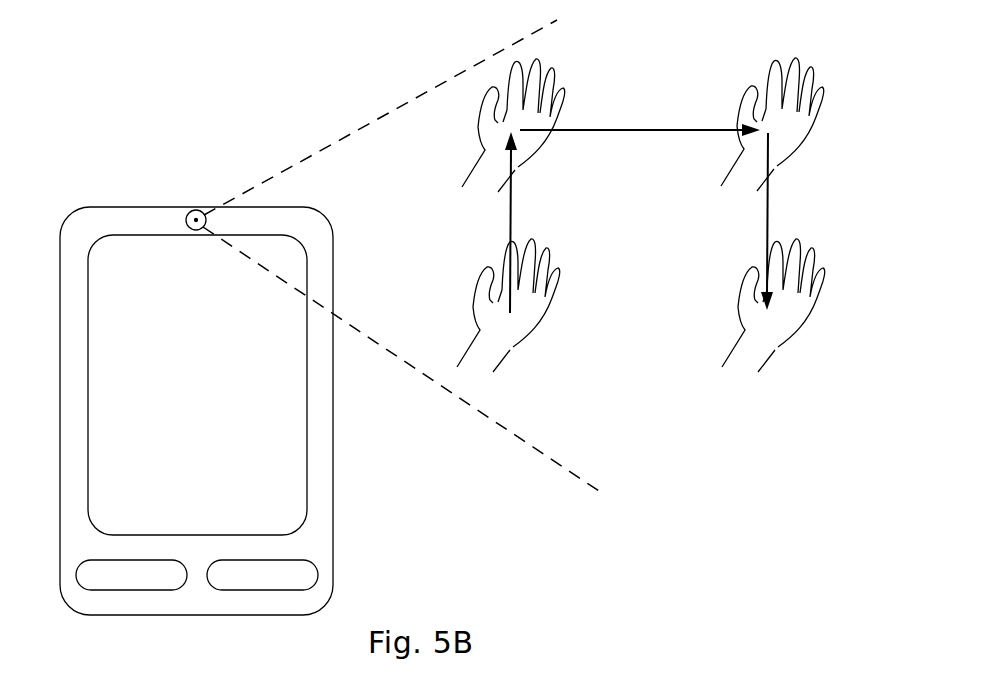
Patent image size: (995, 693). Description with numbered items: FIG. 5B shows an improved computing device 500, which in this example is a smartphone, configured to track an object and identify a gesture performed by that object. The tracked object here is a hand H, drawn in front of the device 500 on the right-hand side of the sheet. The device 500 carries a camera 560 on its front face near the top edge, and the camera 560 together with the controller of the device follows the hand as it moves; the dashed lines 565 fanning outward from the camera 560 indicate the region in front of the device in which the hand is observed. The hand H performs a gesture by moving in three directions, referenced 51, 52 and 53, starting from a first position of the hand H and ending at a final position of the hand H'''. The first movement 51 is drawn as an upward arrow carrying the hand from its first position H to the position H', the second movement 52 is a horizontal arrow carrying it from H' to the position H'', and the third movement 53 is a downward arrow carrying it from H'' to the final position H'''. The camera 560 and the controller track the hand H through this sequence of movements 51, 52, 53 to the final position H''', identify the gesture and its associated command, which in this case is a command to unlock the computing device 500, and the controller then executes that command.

The computing device 500 is at (100, 192).
The camera 560 is at (197, 210).
The field of view of camera 565 is at (348, 129).
The first movement direction 51 is at (526, 222).
The second movement direction 52 is at (640, 143).
The third movement direction 53 is at (751, 221).
The hand H is at (508, 333).
The hand H' is at (492, 125).
The hand H'' is at (795, 130).
The hand in final position H''' is at (776, 324).